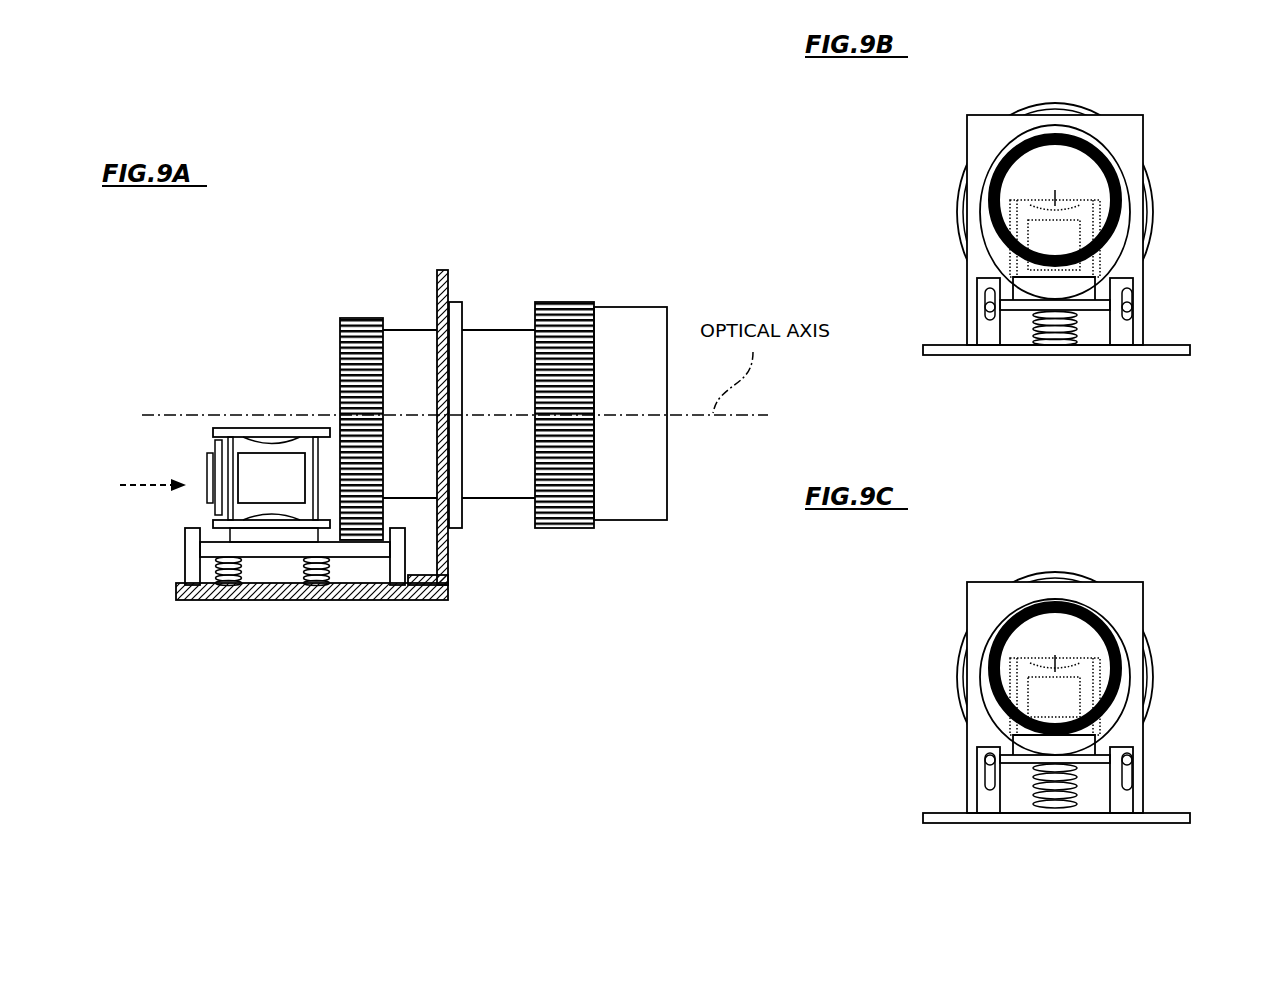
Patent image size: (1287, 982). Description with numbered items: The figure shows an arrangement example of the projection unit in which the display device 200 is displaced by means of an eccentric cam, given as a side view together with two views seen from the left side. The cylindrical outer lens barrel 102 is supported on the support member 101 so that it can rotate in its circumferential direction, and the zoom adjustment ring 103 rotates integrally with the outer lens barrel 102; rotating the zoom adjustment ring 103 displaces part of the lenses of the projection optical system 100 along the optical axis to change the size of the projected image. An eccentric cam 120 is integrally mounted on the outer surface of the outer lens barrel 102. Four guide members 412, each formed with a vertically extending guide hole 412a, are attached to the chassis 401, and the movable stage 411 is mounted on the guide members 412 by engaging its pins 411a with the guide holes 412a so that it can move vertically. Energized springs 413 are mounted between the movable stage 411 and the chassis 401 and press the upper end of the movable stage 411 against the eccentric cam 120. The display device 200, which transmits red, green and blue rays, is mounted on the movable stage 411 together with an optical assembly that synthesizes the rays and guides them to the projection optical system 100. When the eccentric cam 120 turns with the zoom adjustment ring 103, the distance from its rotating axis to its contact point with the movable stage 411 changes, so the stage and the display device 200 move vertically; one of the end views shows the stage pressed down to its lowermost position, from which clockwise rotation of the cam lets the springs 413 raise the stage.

In FIG. 9A, the projection optical system 100 is at (637, 510).
In FIG. 9A, the support member 101 is at (455, 302).
In FIG. 9A, the outer lens barrel 102 is at (487, 502).
In FIG. 9A, the zoom adjustment ring 103 is at (583, 302).
In FIG. 9B, the zoom adjustment ring 103 is at (1155, 165).
In FIG. 9C, the zoom adjustment ring 103 is at (1152, 632).
In FIG. 9A, the eccentric cam 120 is at (362, 318).
In FIG. 9B, the eccentric cam 120 is at (995, 163).
In FIG. 9C, the eccentric cam 120 is at (990, 625).
In FIG. 9A, the display device 200 is at (272, 477).
In FIG. 9A, the chassis 401 is at (217, 598).
In FIG. 9B, the chassis 401 is at (1033, 352).
In FIG. 9C, the chassis 401 is at (1033, 820).
In FIG. 9A, the movable stage 411 is at (342, 548).
In FIG. 9B, the movable stage 411 is at (1055, 305).
In FIG. 9C, the movable stage 411 is at (1055, 759).
In FIG. 9B, the pin 411a is at (987, 300).
In FIG. 9C, the pin 411a is at (988, 755).
In FIG. 9A, the guide member 412 is at (177, 592).
In FIG. 9B, the guide member 412 is at (990, 330).
In FIG. 9C, the guide member 412 is at (990, 805).
In FIG. 9B, the guide hole 412a is at (988, 285).
In FIG. 9C, the guide hole 412a is at (985, 772).
In FIG. 9A, the spring 413 is at (313, 583).
In FIG. 9B, the spring 413 is at (1057, 340).
In FIG. 9C, the spring 413 is at (1057, 808).